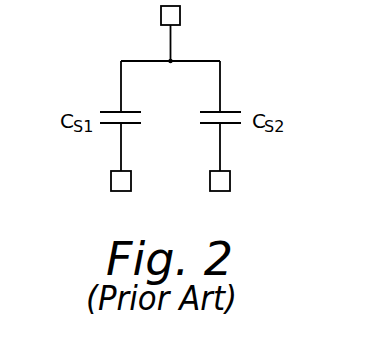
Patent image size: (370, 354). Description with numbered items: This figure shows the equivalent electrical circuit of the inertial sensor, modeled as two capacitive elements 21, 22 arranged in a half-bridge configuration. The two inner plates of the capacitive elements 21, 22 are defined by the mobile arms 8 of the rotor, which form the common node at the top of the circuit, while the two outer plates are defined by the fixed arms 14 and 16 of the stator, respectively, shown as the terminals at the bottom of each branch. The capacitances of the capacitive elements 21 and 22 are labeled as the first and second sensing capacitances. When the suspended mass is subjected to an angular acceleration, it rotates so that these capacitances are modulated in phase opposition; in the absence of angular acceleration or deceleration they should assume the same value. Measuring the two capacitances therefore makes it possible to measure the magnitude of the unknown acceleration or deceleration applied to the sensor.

The mobile arms 8 is at (161, 14).
The capacitive element 21 is at (106, 109).
The capacitive element 22 is at (234, 109).
The fixed arm 14 is at (111, 180).
The fixed arm 16 is at (230, 180).